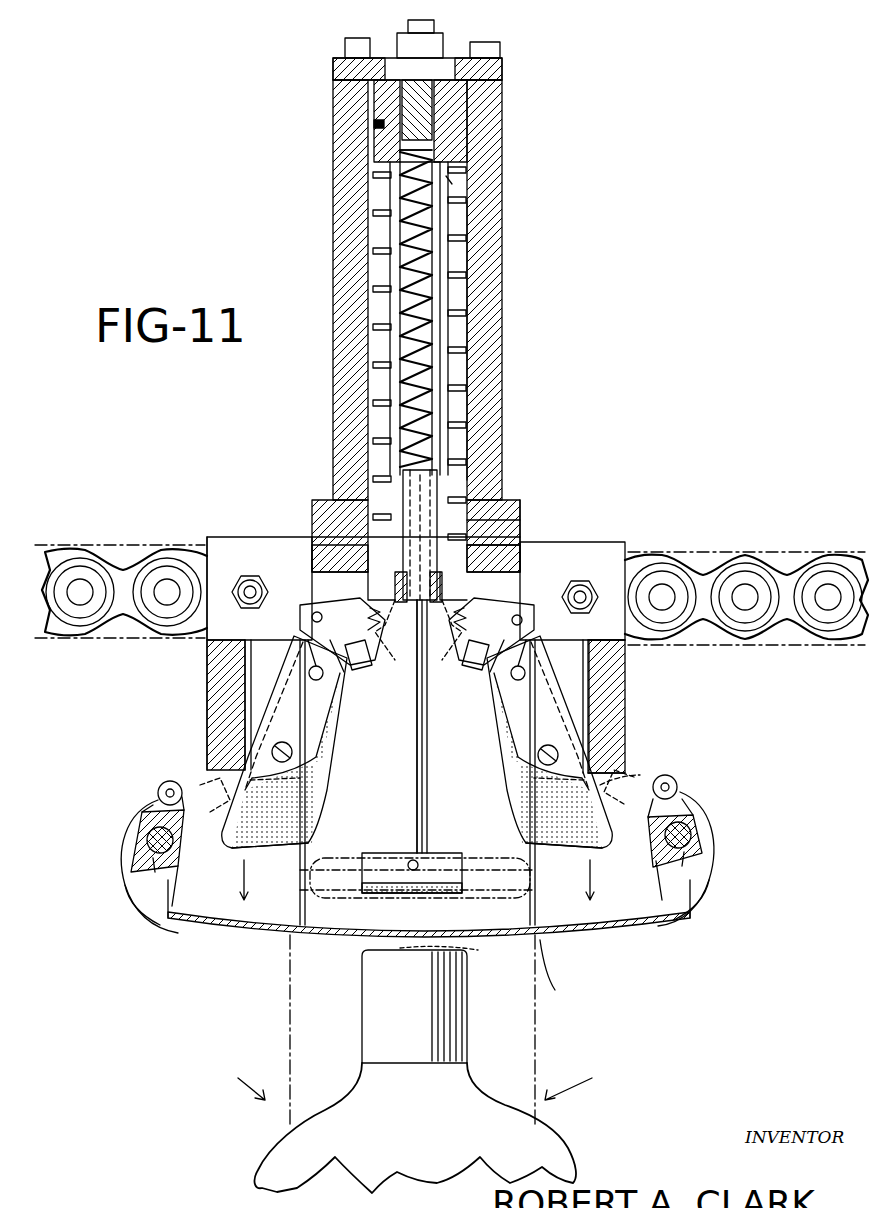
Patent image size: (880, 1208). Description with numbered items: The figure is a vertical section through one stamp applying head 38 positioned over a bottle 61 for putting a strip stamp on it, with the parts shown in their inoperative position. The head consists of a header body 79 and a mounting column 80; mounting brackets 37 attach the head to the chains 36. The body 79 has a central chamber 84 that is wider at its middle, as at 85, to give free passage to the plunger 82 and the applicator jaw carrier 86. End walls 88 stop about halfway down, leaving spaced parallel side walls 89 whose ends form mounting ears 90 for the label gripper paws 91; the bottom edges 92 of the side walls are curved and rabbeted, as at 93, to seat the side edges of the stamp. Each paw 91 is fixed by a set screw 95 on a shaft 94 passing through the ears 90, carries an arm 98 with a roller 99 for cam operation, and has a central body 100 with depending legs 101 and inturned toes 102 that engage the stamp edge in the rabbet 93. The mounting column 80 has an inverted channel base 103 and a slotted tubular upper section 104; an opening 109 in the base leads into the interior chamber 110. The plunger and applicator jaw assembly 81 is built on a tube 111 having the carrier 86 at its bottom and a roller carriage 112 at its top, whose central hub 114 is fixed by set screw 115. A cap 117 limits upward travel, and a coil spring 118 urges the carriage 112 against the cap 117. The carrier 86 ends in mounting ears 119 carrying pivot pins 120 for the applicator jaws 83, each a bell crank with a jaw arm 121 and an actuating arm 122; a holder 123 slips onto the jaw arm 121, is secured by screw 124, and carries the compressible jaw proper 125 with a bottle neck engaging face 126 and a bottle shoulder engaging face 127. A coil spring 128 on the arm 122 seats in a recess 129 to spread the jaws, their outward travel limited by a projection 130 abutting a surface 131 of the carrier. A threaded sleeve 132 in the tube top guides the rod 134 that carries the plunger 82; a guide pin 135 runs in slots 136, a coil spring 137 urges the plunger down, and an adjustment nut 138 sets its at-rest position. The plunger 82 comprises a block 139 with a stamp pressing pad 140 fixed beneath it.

The chains 36 is at (745, 562).
The mounting brackets 37 is at (592, 545).
The stamp applying head 38 is at (648, 692).
The bottle 61 is at (585, 945).
The header body 79 is at (638, 739).
The mounting column 80 is at (512, 438).
The plunger and applicator jaw assembly 81 is at (488, 400).
The plunger 82 is at (440, 855).
The applicator jaws 83 is at (322, 745).
The central chamber 84 is at (600, 680).
The wider middle portion of central chamber 85 is at (540, 862).
The applicator jaw carrier 86 is at (493, 555).
The end walls 88 is at (207, 710).
The side walls 89 is at (640, 775).
The mounting ears 90 is at (135, 805).
The label gripper paws 91 is at (120, 849).
The bottom edges of side walls 92 is at (563, 968).
The rabbet 93 is at (550, 945).
The shafts 94 is at (178, 855).
The set screws 95 is at (135, 880).
The arm 98 is at (198, 790).
The roller 99 is at (681, 771).
The central body of gripper paw 100 is at (172, 875).
The depending legs 101 is at (150, 915).
The inturned toes 102 is at (180, 918).
The base of mounting column 103 is at (530, 540).
The tubular upper section 104 is at (500, 315).
The opening 109 is at (505, 530).
The interior chamber 110 is at (450, 466).
The tube 111 is at (438, 245).
The roller carriage 112 is at (462, 140).
The central hub 114 is at (374, 155).
The set screw 115 is at (375, 124).
The cap 117 is at (502, 62).
The coil spring 118 is at (448, 195).
The mounting ears 119 is at (345, 595).
The jaw mounting pivot pins 120 is at (312, 618).
The jaw arm 121 is at (402, 693).
The actuating arm 122 is at (335, 615).
The holder 123 is at (290, 690).
The screw 124 is at (300, 776).
The jaw proper 125 is at (312, 800).
The bottle neck engaging face 126 is at (292, 752).
The bottle shoulder engaging face 127 is at (476, 848).
The coil spring 128 is at (405, 655).
The recess 129 is at (438, 583).
The projection 130 is at (439, 573).
The surface 131 is at (431, 587).
The threaded sleeve 132 is at (434, 106).
The rod 134 is at (430, 272).
The guide pin 135 is at (395, 474).
The slots 136 is at (466, 330).
The coil spring 137 is at (442, 206).
The adjustment nut 138 is at (445, 45).
The block 139 is at (395, 865).
The stamp pressing pad 140 is at (398, 893).